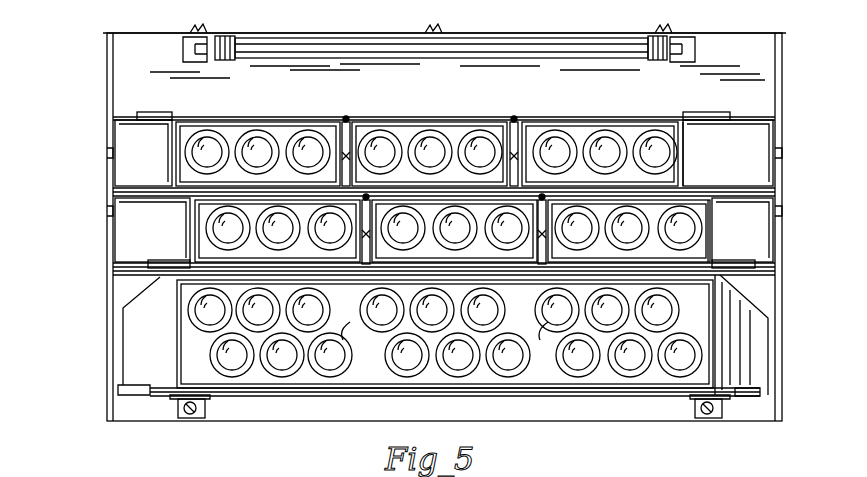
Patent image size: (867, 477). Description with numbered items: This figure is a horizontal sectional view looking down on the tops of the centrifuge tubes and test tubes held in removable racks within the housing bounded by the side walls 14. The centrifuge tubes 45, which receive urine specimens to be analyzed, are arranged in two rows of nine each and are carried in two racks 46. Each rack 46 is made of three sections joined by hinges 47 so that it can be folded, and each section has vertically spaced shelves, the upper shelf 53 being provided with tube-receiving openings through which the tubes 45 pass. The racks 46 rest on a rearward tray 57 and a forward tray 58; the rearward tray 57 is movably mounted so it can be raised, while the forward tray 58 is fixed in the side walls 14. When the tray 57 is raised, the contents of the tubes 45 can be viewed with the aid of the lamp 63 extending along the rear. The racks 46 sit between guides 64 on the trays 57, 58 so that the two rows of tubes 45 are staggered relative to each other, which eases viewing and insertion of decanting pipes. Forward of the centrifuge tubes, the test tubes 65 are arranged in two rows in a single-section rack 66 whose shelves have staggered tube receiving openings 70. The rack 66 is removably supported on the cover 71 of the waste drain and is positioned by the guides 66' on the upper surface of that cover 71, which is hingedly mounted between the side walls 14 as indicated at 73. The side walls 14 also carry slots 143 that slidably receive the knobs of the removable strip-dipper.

The side walls 14 is at (108, 298).
The centrifuge tubes 45 is at (207, 140).
The racks 46 is at (690, 162).
The hinges 47 is at (346, 118).
The shelf 53 is at (293, 132).
The rearward tray 57 is at (135, 170).
The forward tray 58 is at (130, 248).
The lamp 63 is at (470, 48).
The guides 64 is at (152, 113).
The test tubes 65 is at (328, 363).
The rack 66 is at (444, 338).
The guides 66' is at (419, 362).
The tube receiving openings 70 is at (380, 350).
The cover 71 is at (742, 358).
The hinge mounting 73 is at (178, 402).
The slots 143 is at (108, 155).